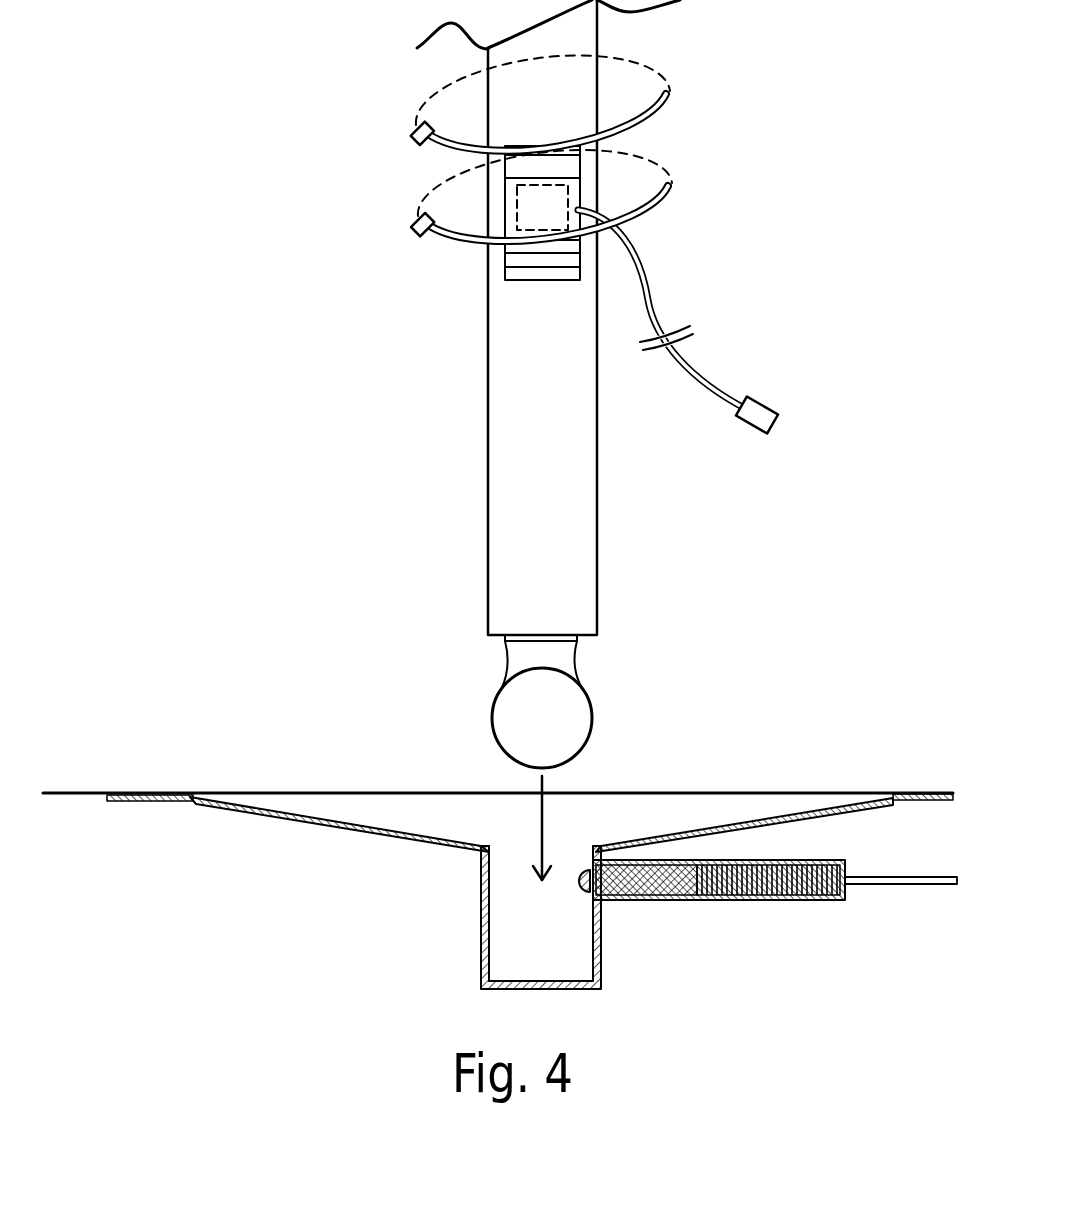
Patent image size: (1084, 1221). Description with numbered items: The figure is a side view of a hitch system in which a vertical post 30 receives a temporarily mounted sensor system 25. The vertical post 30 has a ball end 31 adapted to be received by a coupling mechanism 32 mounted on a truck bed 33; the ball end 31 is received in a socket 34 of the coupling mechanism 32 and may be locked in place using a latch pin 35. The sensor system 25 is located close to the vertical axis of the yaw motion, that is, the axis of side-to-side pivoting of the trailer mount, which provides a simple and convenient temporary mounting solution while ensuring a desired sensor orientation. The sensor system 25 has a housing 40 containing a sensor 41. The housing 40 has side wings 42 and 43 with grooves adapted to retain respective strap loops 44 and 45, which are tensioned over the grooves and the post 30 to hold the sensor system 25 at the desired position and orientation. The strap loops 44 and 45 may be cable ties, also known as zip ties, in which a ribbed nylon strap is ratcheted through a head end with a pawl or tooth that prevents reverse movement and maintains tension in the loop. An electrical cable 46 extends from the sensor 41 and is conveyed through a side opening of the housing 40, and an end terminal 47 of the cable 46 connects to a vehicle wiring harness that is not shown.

The sensor system 25 is at (500, 215).
The vertical post 30 is at (488, 498).
The ball end 31 is at (592, 707).
The coupling mechanism 32 is at (476, 899).
The truck bed 33 is at (80, 793).
The socket 34 is at (570, 945).
The latch pin 35 is at (663, 900).
The housing 40 is at (563, 225).
The sensor 41 is at (517, 200).
The side wing 42 is at (558, 145).
The side wing 43 is at (550, 282).
The strap loop 44 is at (663, 117).
The strap loop 45 is at (666, 205).
The electrical cable 46 is at (655, 290).
The end terminal 47 is at (764, 402).